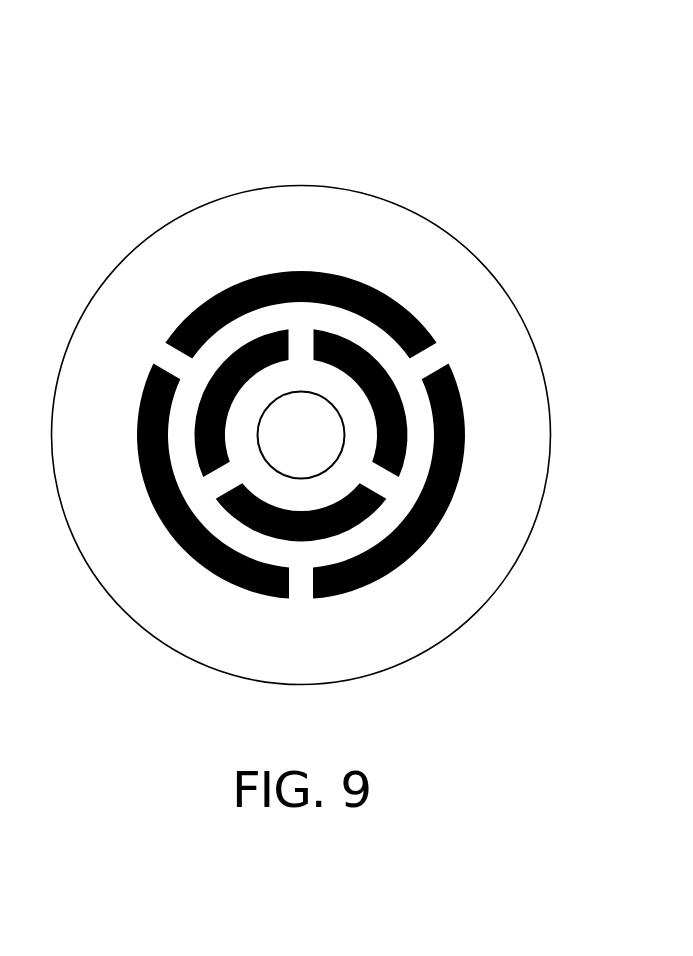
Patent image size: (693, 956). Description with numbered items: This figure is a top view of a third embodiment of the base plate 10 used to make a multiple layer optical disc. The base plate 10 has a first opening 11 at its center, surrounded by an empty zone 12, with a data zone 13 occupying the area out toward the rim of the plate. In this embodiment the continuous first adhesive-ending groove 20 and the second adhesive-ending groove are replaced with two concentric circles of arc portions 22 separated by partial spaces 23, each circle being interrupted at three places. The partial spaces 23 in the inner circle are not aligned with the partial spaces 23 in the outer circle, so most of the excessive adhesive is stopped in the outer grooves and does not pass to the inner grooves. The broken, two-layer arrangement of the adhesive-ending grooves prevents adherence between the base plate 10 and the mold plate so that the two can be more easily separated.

The base plate 10 is at (357, 375).
The first opening 11 is at (308, 452).
The empty zone 12 is at (423, 458).
The data zone 13 is at (518, 400).
The first adhesive-ending groove 20 is at (399, 389).
The arc portions 22 is at (432, 333).
The partial spaces 23 is at (385, 490).